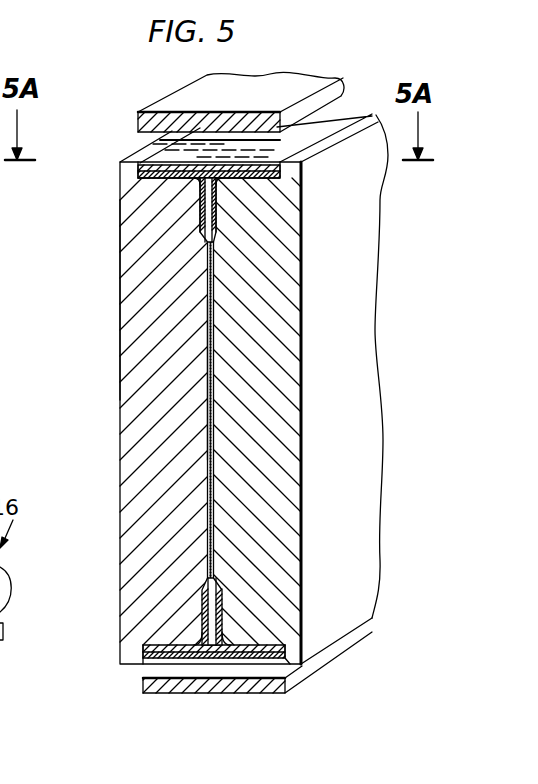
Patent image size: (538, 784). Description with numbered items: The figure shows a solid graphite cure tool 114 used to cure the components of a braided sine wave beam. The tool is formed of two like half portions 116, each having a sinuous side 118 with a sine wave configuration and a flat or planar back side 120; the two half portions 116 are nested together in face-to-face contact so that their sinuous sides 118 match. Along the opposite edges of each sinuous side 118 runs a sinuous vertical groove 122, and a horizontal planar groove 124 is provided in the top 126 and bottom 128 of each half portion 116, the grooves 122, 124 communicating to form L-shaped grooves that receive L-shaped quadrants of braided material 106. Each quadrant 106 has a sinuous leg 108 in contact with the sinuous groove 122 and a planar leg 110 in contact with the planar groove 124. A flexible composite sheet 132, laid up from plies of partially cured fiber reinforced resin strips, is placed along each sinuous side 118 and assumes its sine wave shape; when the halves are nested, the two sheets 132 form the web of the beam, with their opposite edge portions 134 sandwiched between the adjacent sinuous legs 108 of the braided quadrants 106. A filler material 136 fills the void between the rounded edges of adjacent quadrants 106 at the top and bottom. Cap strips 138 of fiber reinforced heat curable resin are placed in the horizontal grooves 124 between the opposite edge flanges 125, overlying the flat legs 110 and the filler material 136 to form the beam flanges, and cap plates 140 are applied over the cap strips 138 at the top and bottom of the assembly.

The L-shaped quadrant of braided material 106 is at (140, 184).
The sinuous leg 108 is at (203, 200).
The planar leg 110 is at (238, 163).
The cure tool 114 is at (103, 286).
The half portion 116 is at (232, 332).
The sinuous side 118 is at (213, 387).
The back side 120 is at (122, 442).
The sinuous vertical groove 122 is at (210, 222).
The horizontal planar groove 124 is at (143, 167).
The edge flange 125 is at (150, 142).
The top 126 is at (315, 152).
The bottom 128 is at (310, 672).
The flexible composite sheet 132 is at (213, 417).
The edge portion 134 is at (200, 222).
The filler material 136 is at (200, 182).
The cap strip 138 is at (188, 160).
The cap plate 140 is at (305, 80).